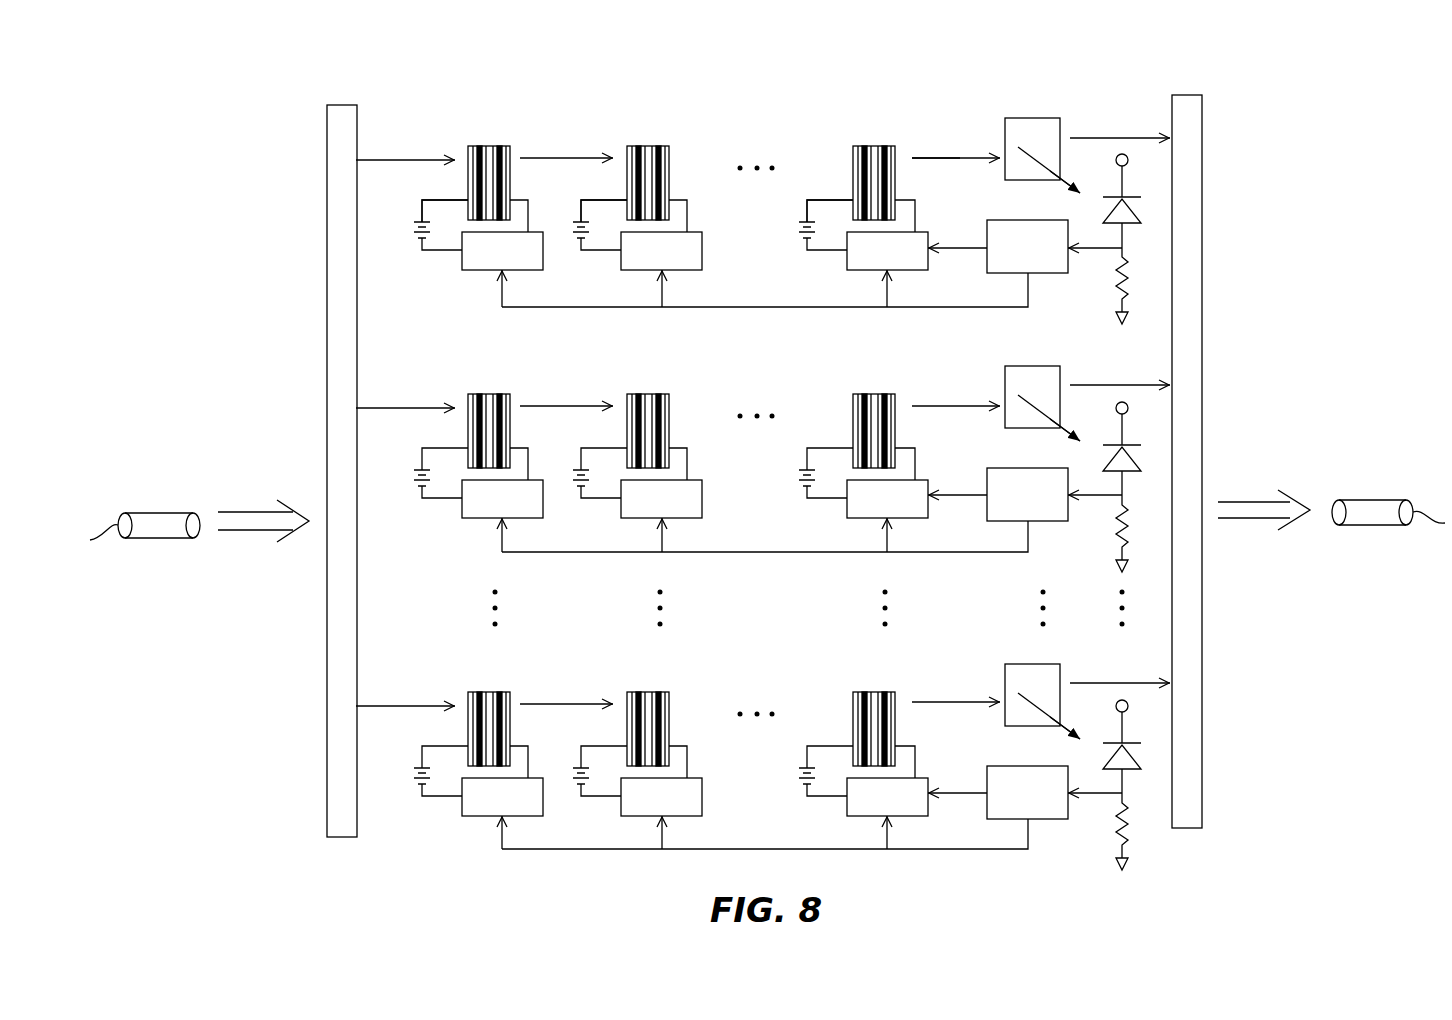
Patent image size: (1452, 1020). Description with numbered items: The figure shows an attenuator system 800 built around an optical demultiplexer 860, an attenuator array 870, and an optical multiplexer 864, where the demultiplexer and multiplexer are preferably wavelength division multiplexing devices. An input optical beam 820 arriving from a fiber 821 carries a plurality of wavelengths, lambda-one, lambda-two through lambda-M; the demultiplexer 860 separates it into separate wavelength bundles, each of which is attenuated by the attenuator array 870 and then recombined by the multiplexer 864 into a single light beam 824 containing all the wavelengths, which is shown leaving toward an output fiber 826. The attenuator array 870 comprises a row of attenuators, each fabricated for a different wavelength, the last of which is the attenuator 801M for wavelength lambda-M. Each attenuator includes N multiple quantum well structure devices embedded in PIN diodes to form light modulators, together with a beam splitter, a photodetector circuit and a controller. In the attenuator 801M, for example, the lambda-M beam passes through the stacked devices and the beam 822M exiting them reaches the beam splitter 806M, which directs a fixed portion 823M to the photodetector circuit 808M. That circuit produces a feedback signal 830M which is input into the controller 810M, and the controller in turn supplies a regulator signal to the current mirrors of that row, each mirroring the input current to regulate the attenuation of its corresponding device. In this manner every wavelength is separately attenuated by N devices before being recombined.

The attenuator system 800 is at (172, 142).
The attenuator 801M is at (445, 660).
The beam splitter 806M is at (1037, 664).
The photodetector circuit 808M is at (1152, 792).
The controller 810M is at (1040, 819).
The input optical beam 820 is at (240, 533).
The fiber 821 is at (158, 540).
The beam 822M is at (950, 701).
The fixed portion of the beam 823M is at (1060, 735).
The single light beam 824 is at (1250, 518).
The output optical fiber 826 is at (1372, 525).
The feedback signal 830M is at (1097, 794).
The optical demultiplexer 860 is at (327, 297).
The optical multiplexer 864 is at (1203, 297).
The attenuator array 870 is at (905, 75).